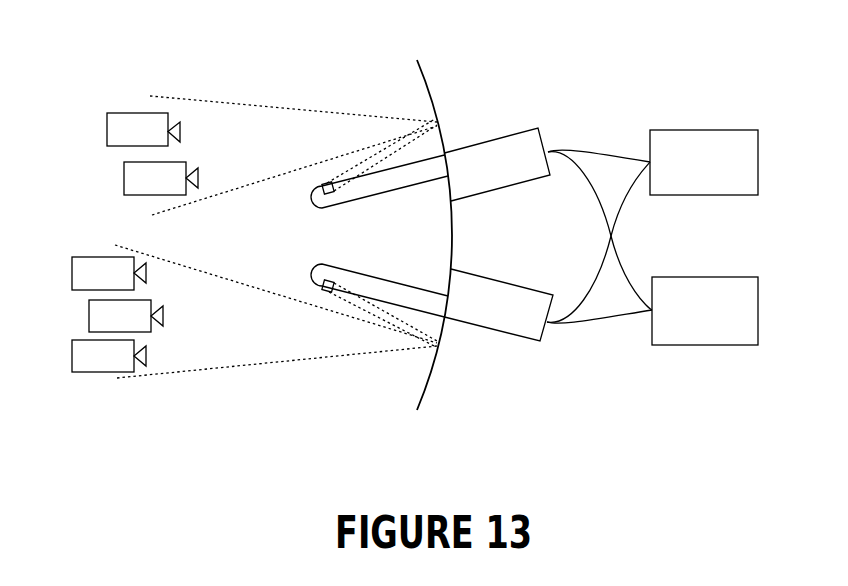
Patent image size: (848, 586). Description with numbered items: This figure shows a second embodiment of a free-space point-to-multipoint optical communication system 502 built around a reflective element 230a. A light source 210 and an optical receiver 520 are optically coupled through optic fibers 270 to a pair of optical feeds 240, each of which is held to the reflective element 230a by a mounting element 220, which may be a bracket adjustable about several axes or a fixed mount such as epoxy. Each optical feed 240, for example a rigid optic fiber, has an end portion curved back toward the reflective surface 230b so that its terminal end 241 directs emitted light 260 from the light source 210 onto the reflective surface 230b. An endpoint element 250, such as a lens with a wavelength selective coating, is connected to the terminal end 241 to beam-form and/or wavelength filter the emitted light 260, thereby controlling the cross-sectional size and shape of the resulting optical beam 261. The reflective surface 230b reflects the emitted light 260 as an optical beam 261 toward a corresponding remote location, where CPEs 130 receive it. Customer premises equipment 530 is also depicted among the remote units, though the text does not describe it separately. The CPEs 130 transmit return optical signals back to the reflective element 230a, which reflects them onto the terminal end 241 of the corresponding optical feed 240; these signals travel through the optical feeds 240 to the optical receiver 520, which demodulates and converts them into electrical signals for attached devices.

The FSPMO communication system 502 is at (685, 67).
The CPE 130 is at (107, 128).
The customer premises equipment 530 is at (89, 315).
The optical beam 261 is at (258, 112).
The reflective element 230a is at (423, 396).
The reflective surface 230b is at (420, 70).
The emitted light 260 is at (440, 122).
The mounting element 220 is at (505, 187).
The optical feed 240 is at (383, 193).
The endpoint element 250 is at (313, 192).
The terminal end 241 is at (326, 182).
The optic fibers 270 is at (650, 160).
The optical receiver 520 is at (758, 143).
The light source 210 is at (758, 292).